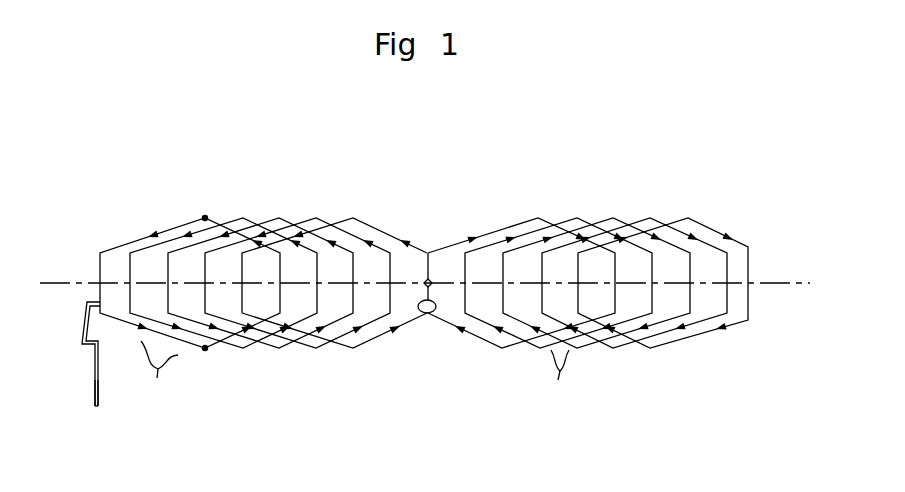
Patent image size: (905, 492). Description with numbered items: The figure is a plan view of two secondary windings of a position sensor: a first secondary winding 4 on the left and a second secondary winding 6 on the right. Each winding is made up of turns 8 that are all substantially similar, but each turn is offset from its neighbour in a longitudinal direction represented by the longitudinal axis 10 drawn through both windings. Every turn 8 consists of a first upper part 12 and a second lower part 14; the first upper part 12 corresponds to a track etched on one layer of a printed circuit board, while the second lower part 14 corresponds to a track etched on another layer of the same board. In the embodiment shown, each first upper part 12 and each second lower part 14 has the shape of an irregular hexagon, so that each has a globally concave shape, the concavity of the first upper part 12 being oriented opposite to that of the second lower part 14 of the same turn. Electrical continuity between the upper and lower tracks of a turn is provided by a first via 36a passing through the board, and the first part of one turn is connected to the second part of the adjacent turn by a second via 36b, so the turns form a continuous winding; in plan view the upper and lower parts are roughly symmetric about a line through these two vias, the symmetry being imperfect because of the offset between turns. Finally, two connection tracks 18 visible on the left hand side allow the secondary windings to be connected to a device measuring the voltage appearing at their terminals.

The first secondary winding 4 is at (263, 220).
The second secondary winding 6 is at (558, 188).
The turns 8 is at (355, 372).
The longitudinal axis 10 is at (770, 283).
The first upper part 12 is at (125, 244).
The second lower part 14 is at (206, 218).
The connection tracks 18 is at (112, 441).
The first via 36a is at (187, 208).
The second via 36b is at (216, 362).